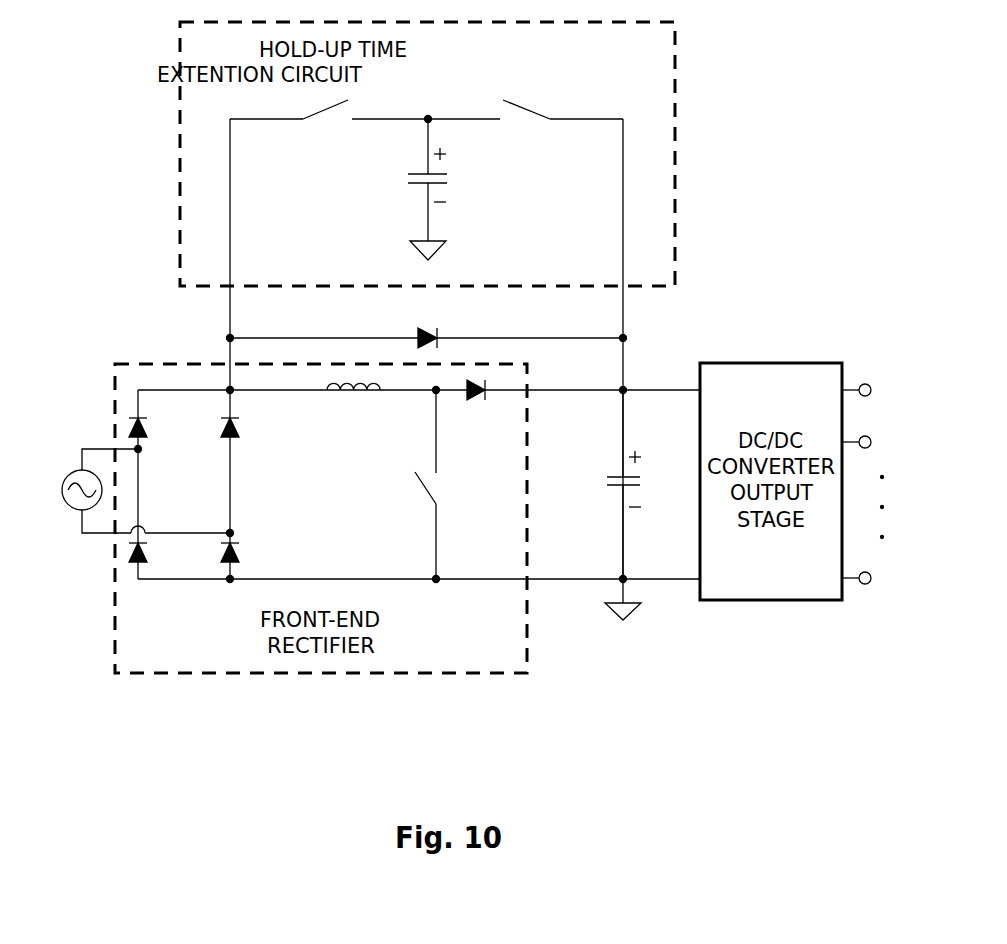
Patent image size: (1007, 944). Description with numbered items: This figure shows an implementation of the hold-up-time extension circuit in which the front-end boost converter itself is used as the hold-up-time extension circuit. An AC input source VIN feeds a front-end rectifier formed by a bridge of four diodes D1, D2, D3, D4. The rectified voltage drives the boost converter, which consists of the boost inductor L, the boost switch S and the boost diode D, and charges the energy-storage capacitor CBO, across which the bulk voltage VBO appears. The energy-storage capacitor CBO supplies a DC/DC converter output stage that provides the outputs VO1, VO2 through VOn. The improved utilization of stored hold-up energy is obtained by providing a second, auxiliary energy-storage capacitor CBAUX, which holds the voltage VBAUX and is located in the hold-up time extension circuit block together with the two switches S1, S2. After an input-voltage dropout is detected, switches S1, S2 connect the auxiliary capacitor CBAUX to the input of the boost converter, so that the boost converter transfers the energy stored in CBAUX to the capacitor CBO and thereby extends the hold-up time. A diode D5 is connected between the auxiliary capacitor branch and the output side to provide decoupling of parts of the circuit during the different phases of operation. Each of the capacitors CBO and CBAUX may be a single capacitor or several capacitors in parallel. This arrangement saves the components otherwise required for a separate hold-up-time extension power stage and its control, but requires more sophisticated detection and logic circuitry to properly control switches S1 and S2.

The switch S1 is at (329, 128).
The switch S2 is at (525, 128).
The auxiliary energy-storage capacitor CBAUX is at (402, 189).
The auxiliary bulk capacitor voltage VBAUX is at (473, 175).
The diode connecting auxiliary capacitor to output D5 is at (426, 325).
The AC input voltage source VIN is at (131, 491).
The front-end rectifier diode D1 is at (157, 431).
The front-end rectifier diode D2 is at (157, 557).
The front-end rectifier diode D3 is at (249, 431).
The front-end rectifier diode D4 is at (249, 557).
The boost inductor L is at (353, 403).
The boost diode D is at (476, 406).
The boost switch S is at (413, 484).
The energy-storage capacitor CBO is at (601, 505).
The output bulk capacitor voltage VBO is at (660, 479).
The first DC/DC converter output VO1 is at (879, 393).
The second DC/DC converter output VO2 is at (879, 445).
The n-th DC/DC converter output VOn is at (879, 581).